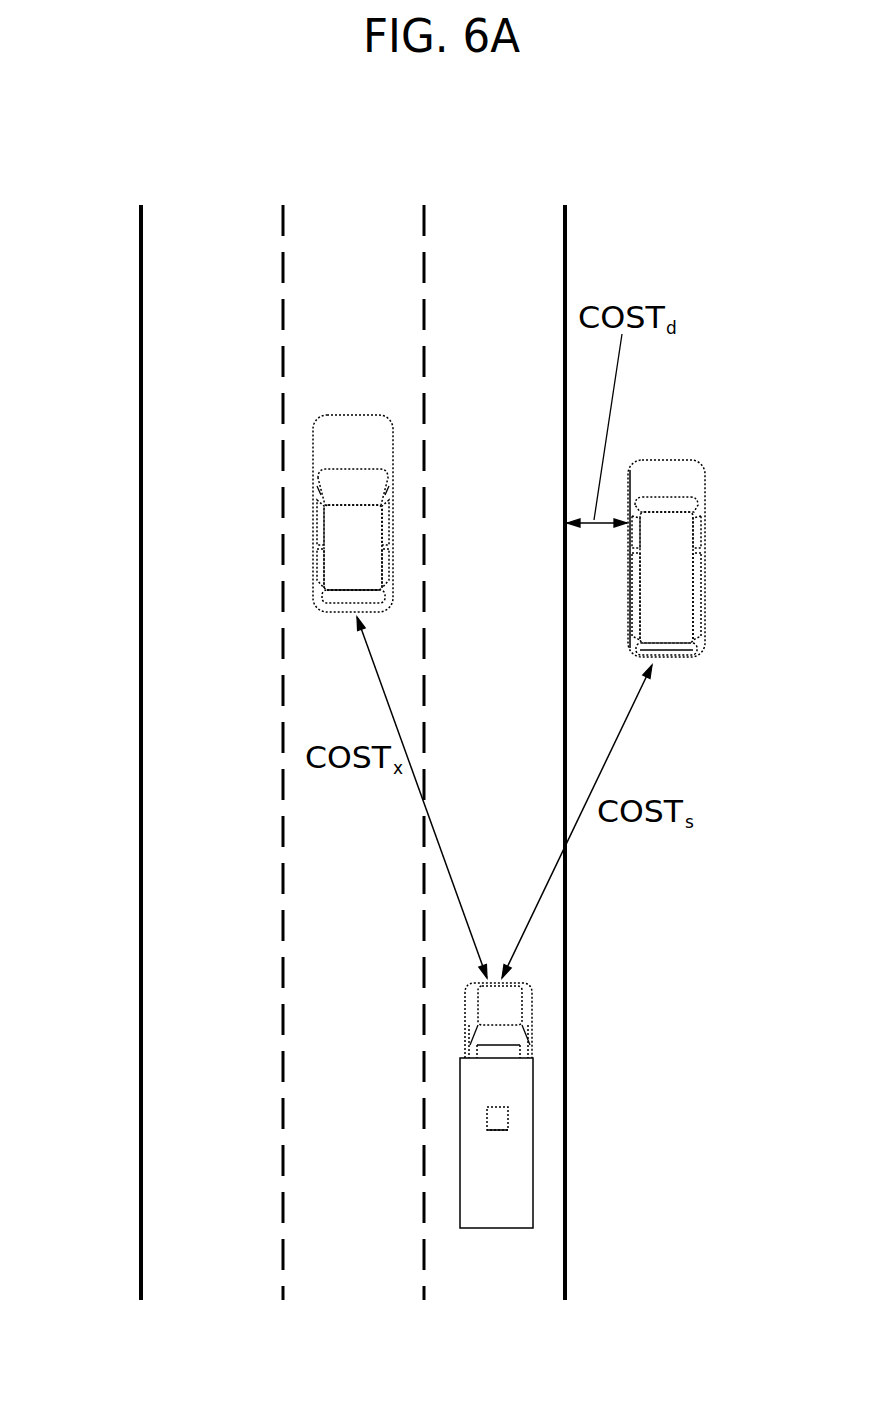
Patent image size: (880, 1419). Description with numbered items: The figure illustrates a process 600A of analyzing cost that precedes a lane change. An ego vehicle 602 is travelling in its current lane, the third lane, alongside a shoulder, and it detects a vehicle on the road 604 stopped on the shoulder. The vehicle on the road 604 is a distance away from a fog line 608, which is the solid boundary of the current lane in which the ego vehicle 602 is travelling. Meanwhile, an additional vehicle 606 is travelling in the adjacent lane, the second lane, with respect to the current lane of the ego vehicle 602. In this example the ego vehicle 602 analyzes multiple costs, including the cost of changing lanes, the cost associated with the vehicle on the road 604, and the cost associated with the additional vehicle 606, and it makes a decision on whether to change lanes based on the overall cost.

The process of analyzing cost 600A is at (98, 54).
The ego vehicle 602 is at (477, 1208).
The vehicle on the road (VOS) 604 is at (674, 468).
The additional vehicle 606 is at (361, 428).
The fog line 608 is at (567, 257).